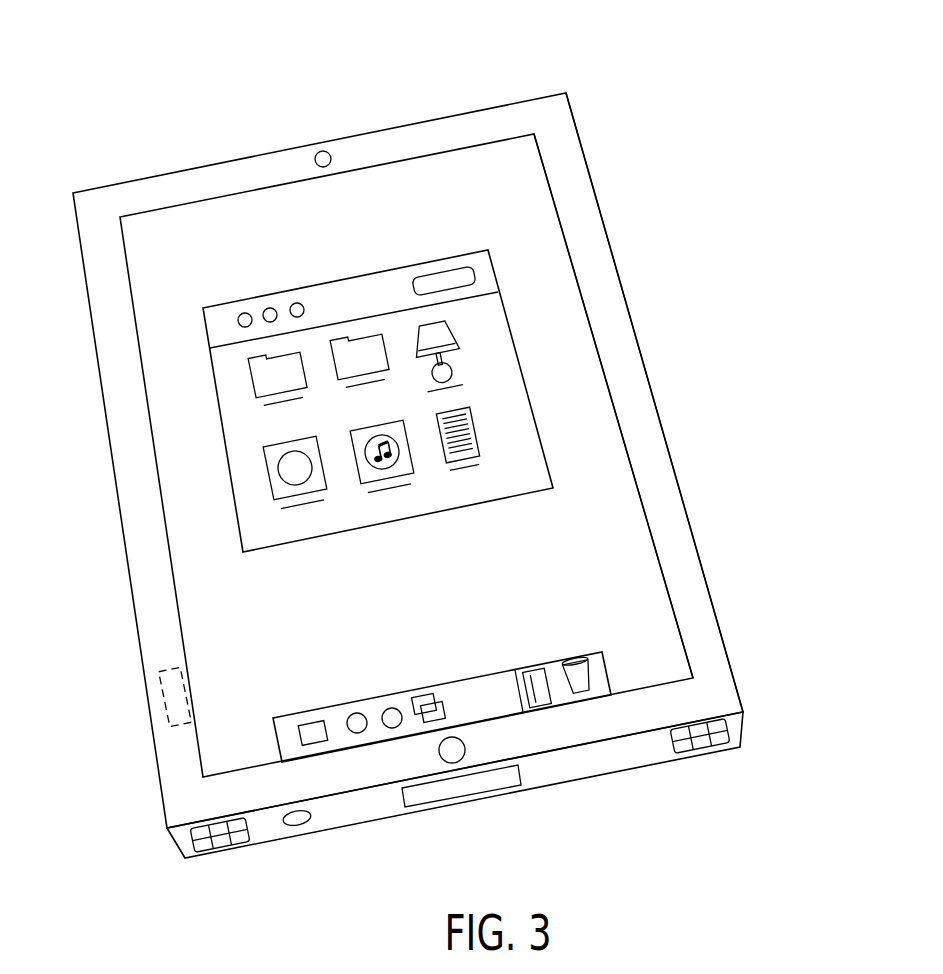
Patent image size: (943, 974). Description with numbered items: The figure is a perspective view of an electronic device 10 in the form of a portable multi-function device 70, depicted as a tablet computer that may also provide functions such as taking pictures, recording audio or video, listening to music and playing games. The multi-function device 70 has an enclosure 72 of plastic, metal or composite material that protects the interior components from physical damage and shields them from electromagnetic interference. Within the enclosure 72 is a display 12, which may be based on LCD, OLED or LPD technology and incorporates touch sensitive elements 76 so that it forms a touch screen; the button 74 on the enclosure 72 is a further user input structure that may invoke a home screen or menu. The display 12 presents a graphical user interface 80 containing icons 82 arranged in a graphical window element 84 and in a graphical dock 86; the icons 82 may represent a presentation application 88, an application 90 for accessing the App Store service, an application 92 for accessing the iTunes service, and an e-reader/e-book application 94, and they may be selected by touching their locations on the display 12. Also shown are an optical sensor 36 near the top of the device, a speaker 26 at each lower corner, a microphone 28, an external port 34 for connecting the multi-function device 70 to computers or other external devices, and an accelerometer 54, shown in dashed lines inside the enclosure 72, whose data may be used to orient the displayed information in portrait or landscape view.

The electronic device 10 is at (215, 48).
The display 12 is at (545, 243).
The speaker 26 is at (218, 847).
The microphone 28 is at (298, 830).
The external port 34 is at (462, 797).
The optical sensor 36 is at (323, 151).
The accelerometer 54 is at (153, 693).
The multi-function device 70 is at (495, 107).
The enclosure 72 is at (660, 483).
The button 74 is at (467, 747).
The touch sensitive elements 76 is at (645, 615).
The graphical user interface 80 is at (243, 247).
The icons 82 is at (250, 375).
The graphical window element 84 is at (345, 279).
The graphical dock 86 is at (433, 685).
The presentation application 88 is at (455, 338).
The App Store application 90 is at (263, 470).
The iTunes application 92 is at (410, 445).
The e-reader/e-book application 94 is at (480, 432).